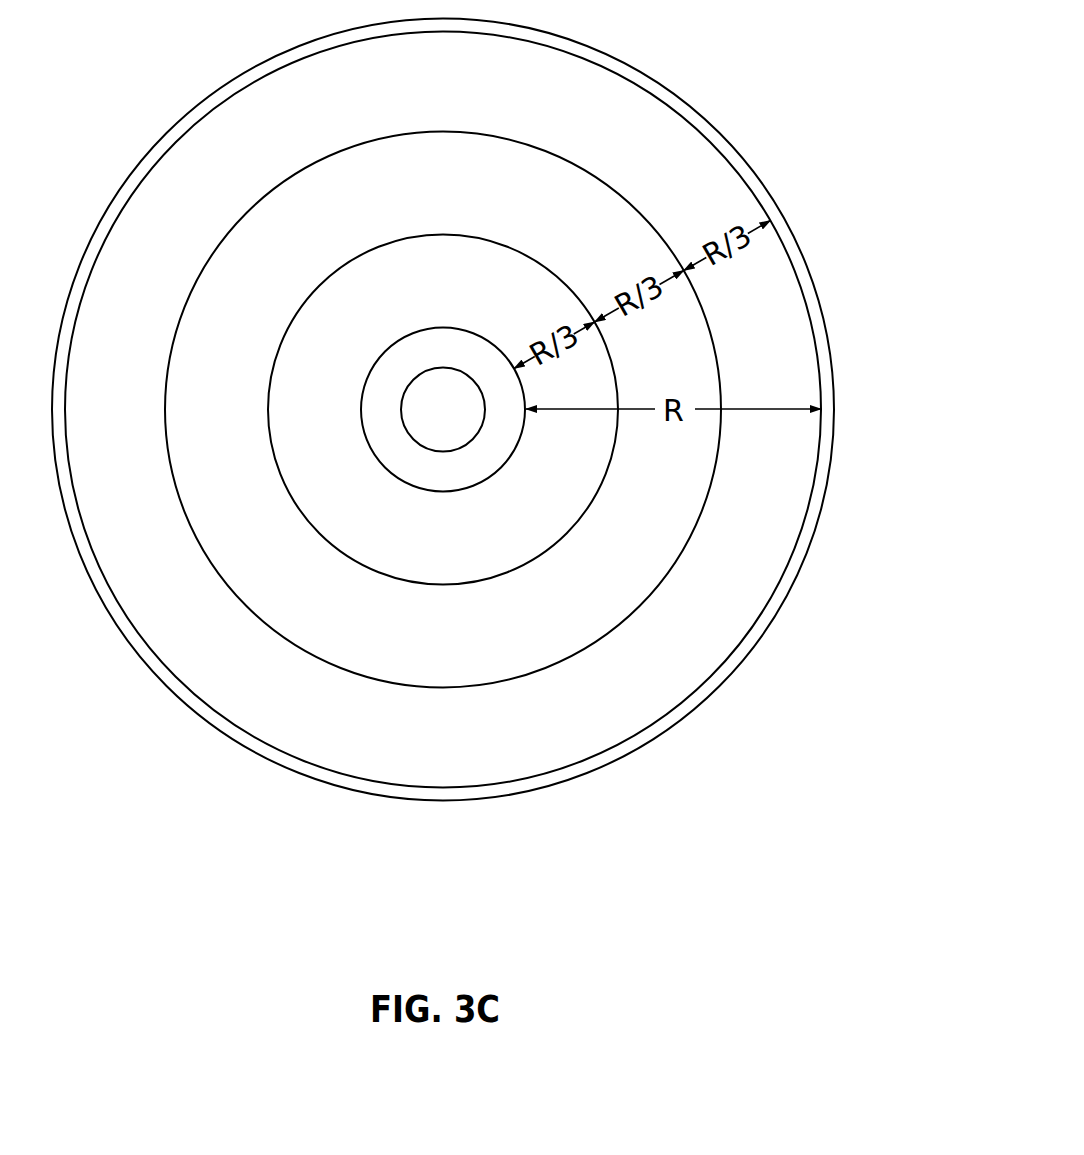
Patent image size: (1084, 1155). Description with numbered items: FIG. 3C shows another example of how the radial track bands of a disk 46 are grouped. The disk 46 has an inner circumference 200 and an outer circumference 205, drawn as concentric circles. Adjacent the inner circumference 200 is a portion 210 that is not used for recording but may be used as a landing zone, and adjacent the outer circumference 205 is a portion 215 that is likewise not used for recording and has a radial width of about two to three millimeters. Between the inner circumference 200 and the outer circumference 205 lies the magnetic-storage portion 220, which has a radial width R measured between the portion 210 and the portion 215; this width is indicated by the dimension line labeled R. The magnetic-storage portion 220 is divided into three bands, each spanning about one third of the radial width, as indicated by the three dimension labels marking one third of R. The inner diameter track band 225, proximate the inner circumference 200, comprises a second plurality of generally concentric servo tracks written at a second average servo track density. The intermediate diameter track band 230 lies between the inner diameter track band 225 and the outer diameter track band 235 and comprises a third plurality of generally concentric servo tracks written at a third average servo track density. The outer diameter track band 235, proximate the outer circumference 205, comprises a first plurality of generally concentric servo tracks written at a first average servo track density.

The disk 46 is at (741, 74).
The inner circumference 200 is at (402, 409).
The outer circumference 205 is at (782, 608).
The portion proximate the inner circumference 210 is at (420, 338).
The portion proximate the outer circumference 215 is at (710, 683).
The magnetic-storage portion 220 is at (447, 788).
The inner diameter track band 225 is at (412, 248).
The intermediate diameter track band 230 is at (413, 140).
The outer diameter track band 235 is at (793, 470).